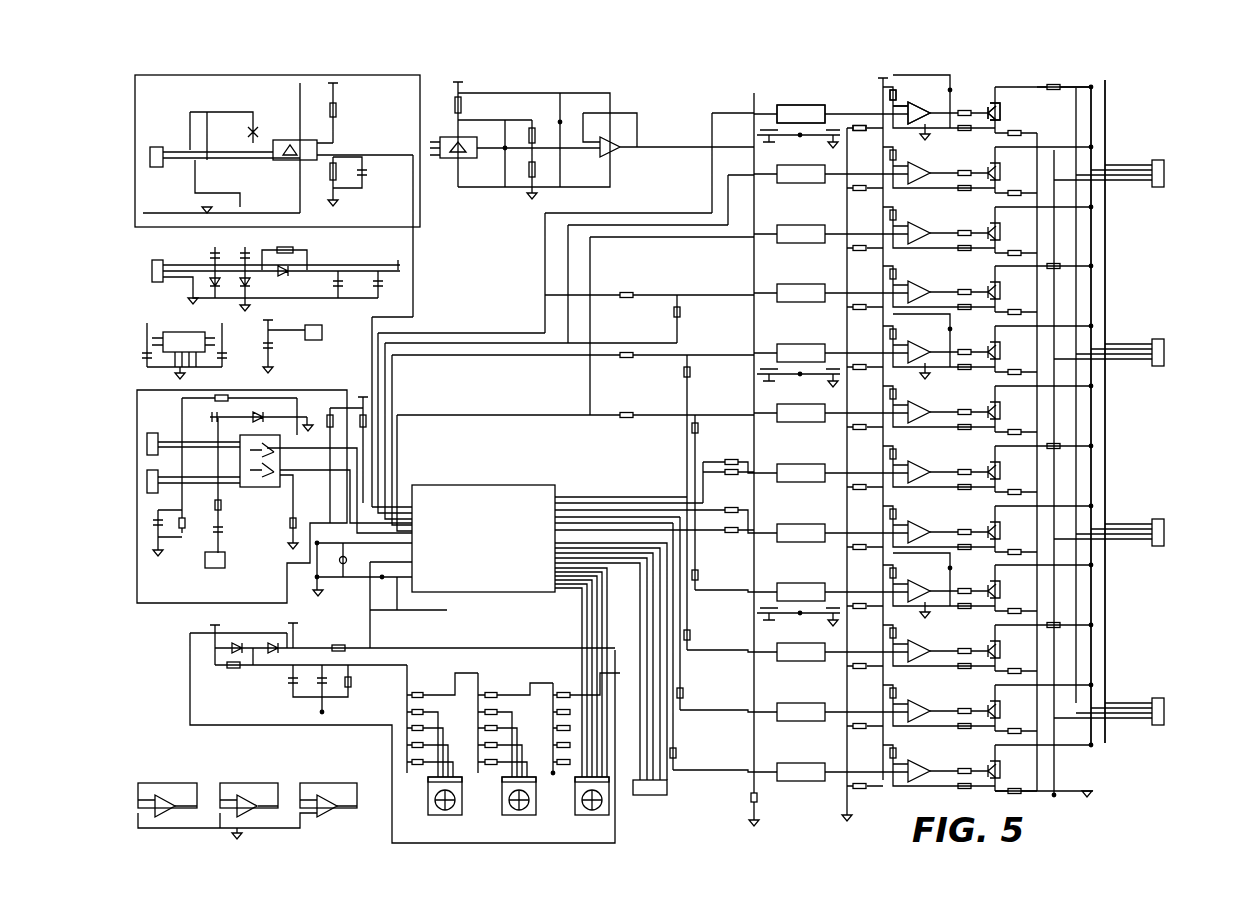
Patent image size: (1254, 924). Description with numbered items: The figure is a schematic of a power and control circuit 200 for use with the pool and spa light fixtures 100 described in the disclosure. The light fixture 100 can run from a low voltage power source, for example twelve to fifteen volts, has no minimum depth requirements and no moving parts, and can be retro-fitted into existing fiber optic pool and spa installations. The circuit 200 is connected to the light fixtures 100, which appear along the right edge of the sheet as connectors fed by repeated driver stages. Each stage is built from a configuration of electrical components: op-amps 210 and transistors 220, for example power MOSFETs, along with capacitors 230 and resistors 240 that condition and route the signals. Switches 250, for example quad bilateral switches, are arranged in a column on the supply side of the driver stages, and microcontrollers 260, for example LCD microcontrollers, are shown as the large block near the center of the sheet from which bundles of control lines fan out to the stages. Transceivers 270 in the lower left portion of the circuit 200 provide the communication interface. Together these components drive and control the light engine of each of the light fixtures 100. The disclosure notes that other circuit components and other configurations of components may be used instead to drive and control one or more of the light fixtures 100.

The light fixture 100 is at (1163, 167).
The circuit 200 is at (1157, 92).
The op-amps 210 is at (925, 110).
The transistors 220 is at (1003, 107).
The capacitors 230 is at (1090, 88).
The resistors 240 is at (857, 127).
The switches 250 is at (795, 107).
The microcontrollers 260 is at (496, 485).
The transceivers 270 is at (265, 443).